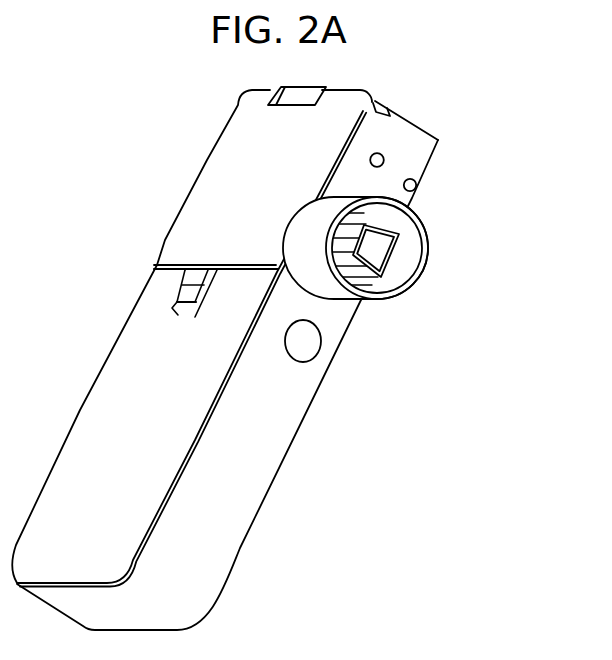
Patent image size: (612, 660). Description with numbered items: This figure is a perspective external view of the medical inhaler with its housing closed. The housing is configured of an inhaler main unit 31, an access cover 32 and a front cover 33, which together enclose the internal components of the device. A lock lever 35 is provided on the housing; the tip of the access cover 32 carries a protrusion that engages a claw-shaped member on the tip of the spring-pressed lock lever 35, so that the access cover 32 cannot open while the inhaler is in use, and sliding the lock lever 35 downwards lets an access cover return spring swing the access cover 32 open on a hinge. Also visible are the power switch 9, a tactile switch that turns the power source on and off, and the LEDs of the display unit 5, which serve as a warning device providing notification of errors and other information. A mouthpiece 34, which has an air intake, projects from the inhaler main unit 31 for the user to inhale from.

The display unit 5 is at (418, 180).
The power source switch 9 is at (321, 342).
The inhaler main unit 31 is at (275, 393).
The access cover 32 is at (222, 168).
The front cover 33 is at (150, 458).
The mouthpiece 34 is at (428, 265).
The lock lever 35 is at (190, 291).